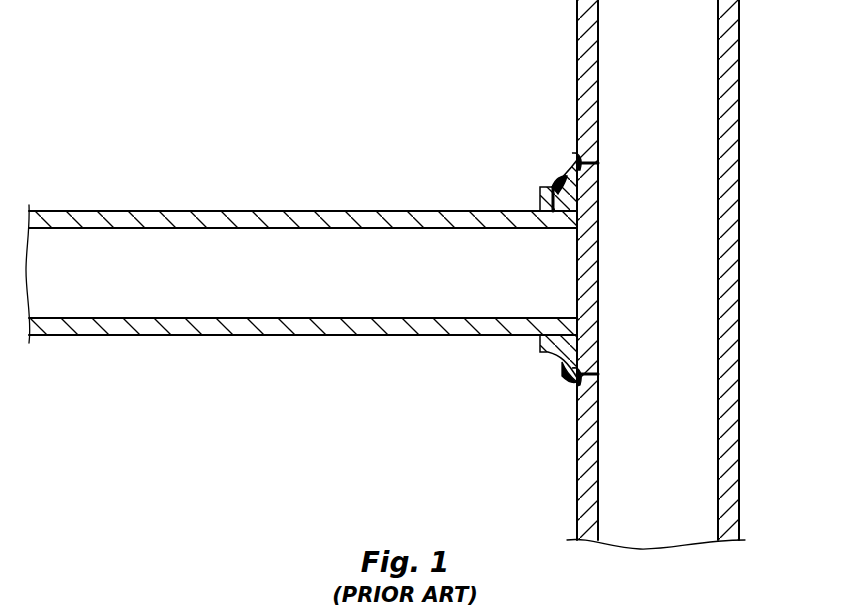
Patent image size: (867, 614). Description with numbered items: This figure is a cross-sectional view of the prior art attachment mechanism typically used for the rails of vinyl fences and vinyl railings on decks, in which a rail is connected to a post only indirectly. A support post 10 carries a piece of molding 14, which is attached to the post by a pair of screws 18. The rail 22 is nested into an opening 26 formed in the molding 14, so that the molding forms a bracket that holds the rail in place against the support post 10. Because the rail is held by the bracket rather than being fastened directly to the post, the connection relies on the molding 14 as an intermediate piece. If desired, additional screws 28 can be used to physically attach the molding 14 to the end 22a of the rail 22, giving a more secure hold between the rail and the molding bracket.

The support post 10 is at (732, 112).
The rail 22 is at (250, 211).
The end of the rail 22a is at (557, 323).
The molding 14 is at (545, 353).
The opening 26 is at (535, 198).
The additional screws 28 is at (550, 186).
The screws 18 is at (572, 153).